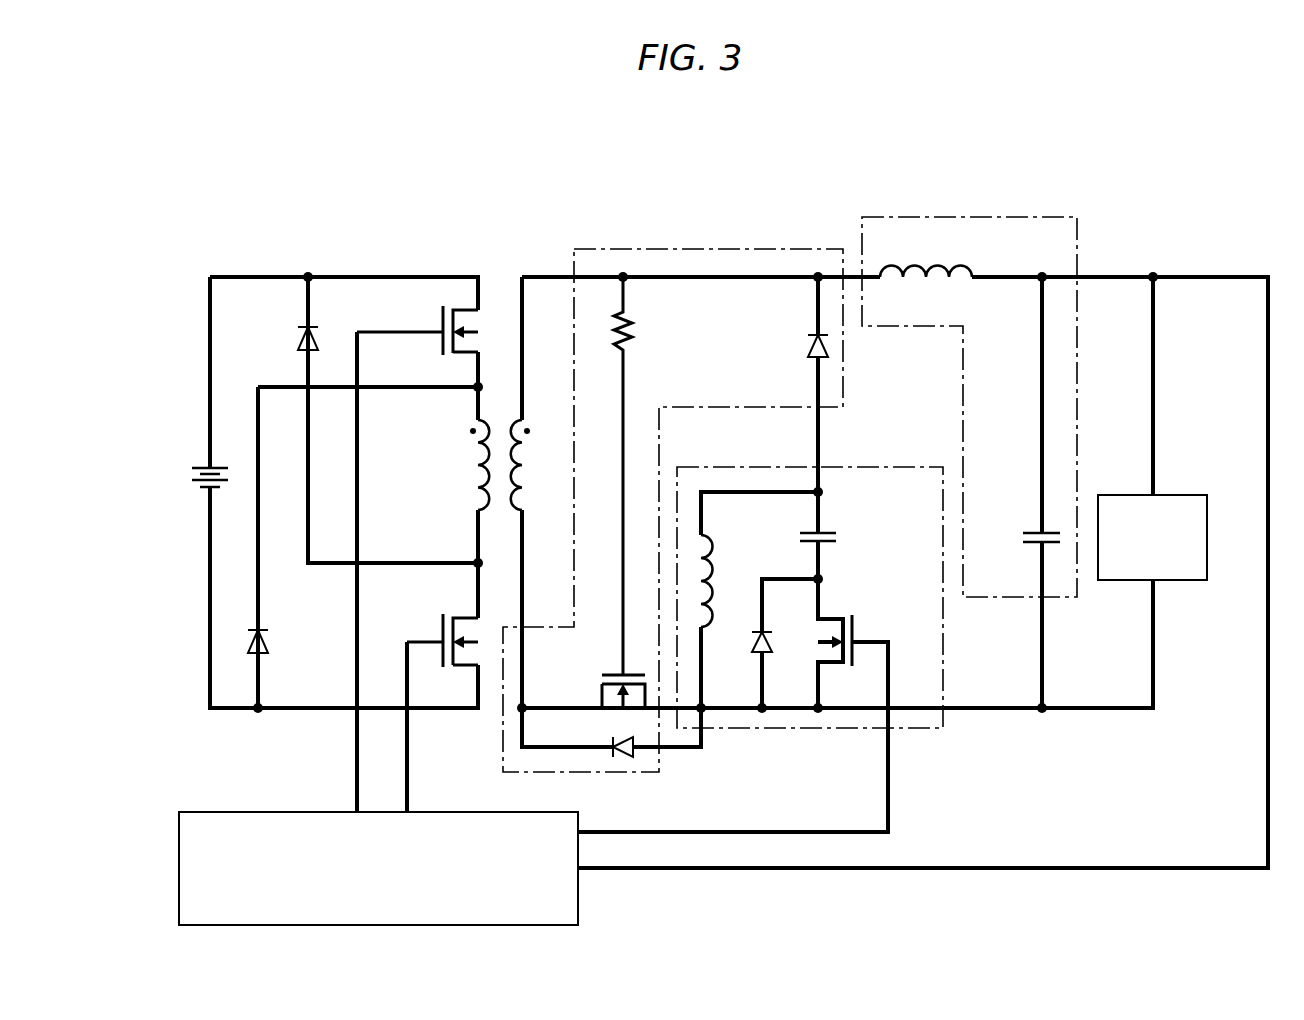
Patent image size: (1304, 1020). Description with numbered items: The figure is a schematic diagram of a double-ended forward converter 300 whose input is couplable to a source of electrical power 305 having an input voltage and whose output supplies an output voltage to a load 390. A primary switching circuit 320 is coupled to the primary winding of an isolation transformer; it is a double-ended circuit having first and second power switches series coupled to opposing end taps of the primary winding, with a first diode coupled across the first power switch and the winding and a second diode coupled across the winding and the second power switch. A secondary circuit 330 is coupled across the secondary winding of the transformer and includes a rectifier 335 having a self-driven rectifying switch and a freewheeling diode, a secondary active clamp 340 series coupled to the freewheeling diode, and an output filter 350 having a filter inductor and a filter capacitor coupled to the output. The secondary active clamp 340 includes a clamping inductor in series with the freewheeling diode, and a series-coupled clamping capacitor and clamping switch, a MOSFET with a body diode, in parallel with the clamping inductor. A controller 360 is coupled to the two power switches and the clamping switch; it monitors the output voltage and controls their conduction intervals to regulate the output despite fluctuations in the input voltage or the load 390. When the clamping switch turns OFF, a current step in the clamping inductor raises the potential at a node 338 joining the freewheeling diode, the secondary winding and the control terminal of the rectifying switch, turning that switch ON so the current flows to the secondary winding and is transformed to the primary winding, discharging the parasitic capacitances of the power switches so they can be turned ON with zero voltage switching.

The double-ended forward converter 300 is at (498, 200).
The source of electrical power 305 is at (185, 474).
The primary switching circuit 320 is at (213, 200).
The secondary circuit 330 is at (1085, 200).
The rectifier 335 is at (797, 384).
The node 338 is at (843, 249).
The secondary active clamp 340 is at (760, 649).
The output filter 350 is at (969, 462).
The controller 360 is at (378, 868).
The load 390 is at (1152, 537).